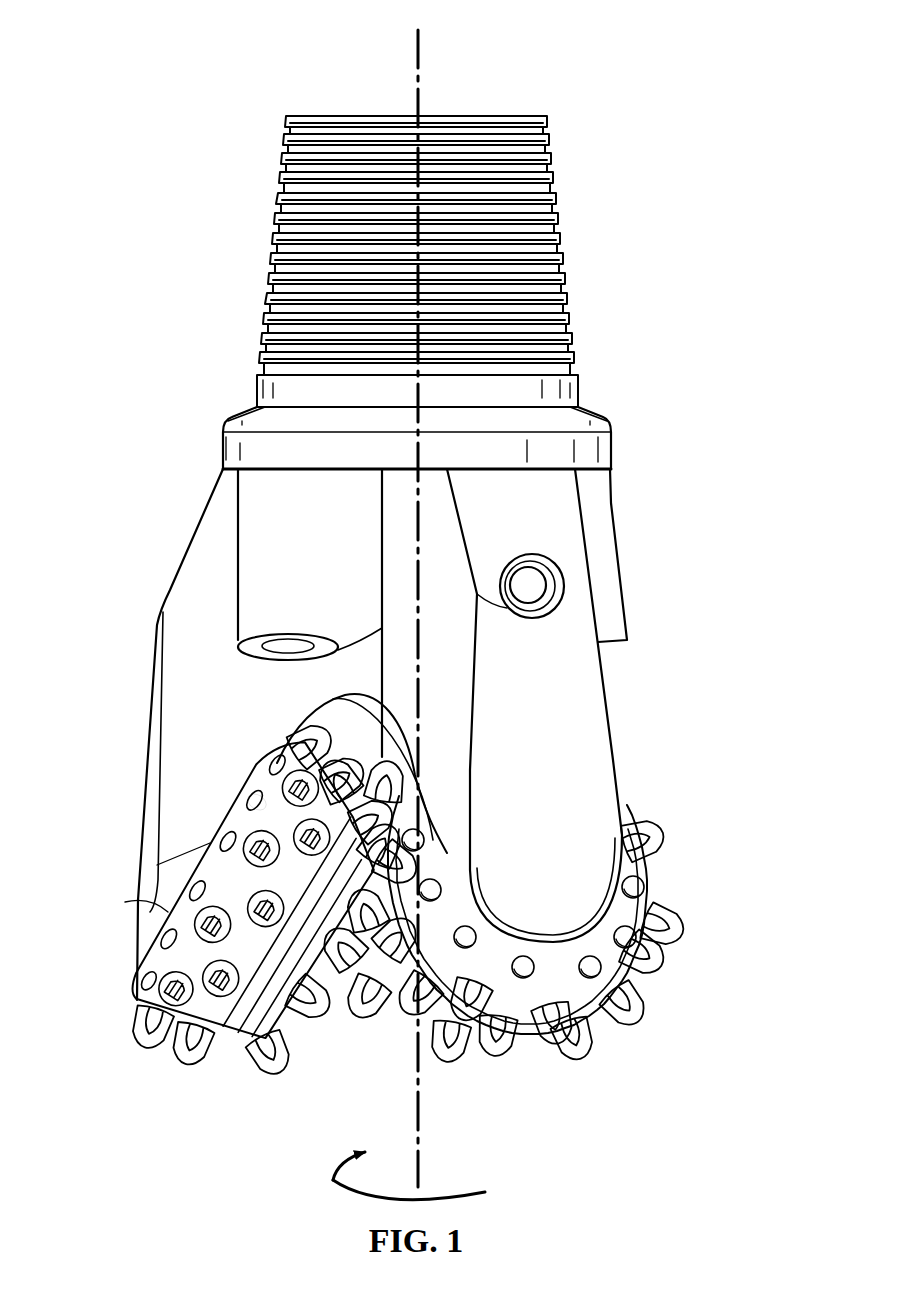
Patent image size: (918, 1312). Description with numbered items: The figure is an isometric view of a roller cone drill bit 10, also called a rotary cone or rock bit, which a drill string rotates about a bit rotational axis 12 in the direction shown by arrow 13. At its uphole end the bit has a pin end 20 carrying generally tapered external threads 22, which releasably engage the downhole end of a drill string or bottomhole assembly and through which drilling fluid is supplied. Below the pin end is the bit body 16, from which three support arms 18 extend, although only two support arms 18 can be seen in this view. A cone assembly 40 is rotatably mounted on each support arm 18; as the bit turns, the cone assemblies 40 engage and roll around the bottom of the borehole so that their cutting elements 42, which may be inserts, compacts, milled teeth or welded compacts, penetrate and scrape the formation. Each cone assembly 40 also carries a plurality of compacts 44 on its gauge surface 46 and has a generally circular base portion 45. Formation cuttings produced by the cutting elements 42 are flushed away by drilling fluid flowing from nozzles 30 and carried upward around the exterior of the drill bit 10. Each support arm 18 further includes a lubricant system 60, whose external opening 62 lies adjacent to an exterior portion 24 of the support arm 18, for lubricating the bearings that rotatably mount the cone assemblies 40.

The roller cone drill bit 10 is at (728, 520).
The bit rotational axis 12 is at (412, 32).
The arrow 13 is at (332, 1182).
The bit body 16 is at (154, 532).
The support arm 18 is at (150, 694).
The pin end 20 is at (431, 261).
The external threads 22 is at (283, 200).
The exterior portion 24 is at (555, 749).
The nozzle 30 is at (285, 648).
The cone assembly 40 is at (240, 1064).
The cutting element 42 is at (165, 1043).
The compact 44 is at (258, 808).
The circular base portion 45 is at (152, 950).
The gauge surface 46 is at (170, 898).
The lubricant system 60 is at (585, 563).
The external opening 62 is at (578, 556).